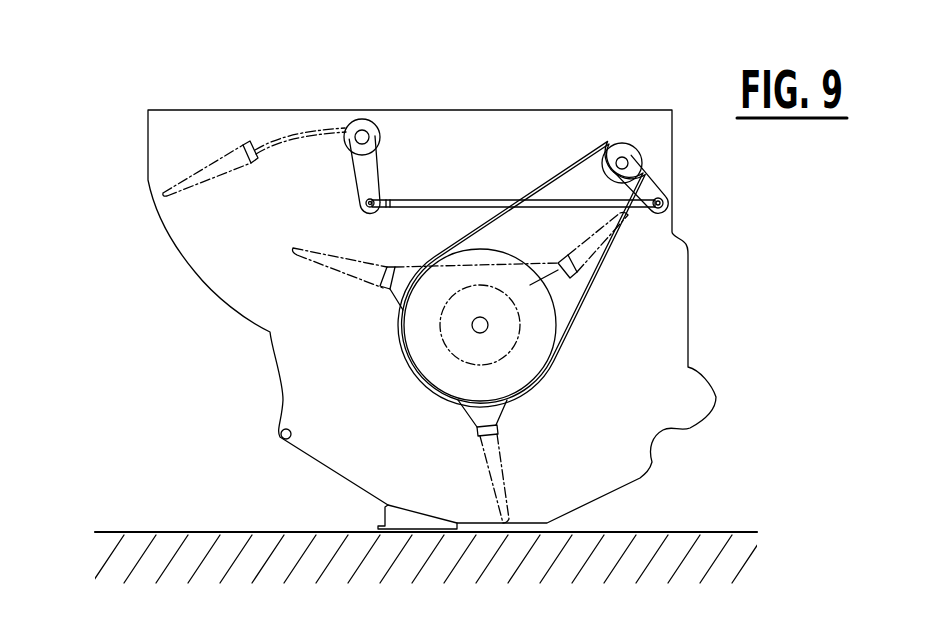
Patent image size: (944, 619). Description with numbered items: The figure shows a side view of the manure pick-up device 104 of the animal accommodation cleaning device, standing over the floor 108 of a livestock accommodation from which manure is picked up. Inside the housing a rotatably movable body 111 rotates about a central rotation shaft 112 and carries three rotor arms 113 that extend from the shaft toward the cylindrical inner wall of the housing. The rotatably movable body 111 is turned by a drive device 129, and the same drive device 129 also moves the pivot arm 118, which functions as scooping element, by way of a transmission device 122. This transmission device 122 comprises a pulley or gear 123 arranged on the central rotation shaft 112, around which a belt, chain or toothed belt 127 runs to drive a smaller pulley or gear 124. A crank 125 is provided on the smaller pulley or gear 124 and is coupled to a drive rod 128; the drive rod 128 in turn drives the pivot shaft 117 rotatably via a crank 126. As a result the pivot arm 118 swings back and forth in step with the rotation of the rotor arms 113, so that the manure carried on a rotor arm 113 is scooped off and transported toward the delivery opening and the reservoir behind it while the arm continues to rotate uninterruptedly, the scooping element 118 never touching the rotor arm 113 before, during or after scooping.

The manure pick-up device 104 is at (519, 85).
The floor 108 is at (125, 503).
The rotatably movable body 111 is at (392, 292).
The central rotation shaft 112 is at (480, 317).
The rotor arms 113 is at (347, 268).
The pivot shaft 117 is at (362, 119).
The pivot arm 118 is at (208, 174).
The transmission device 122 is at (588, 128).
The pulley or gear 123 is at (536, 338).
The smaller pulley or gear 124 is at (640, 152).
The crank 125 is at (652, 188).
The crank 126 is at (353, 165).
The belt, chain or toothed belt 127 is at (567, 170).
The drive rod 128 is at (427, 200).
The drive device 129 is at (465, 354).